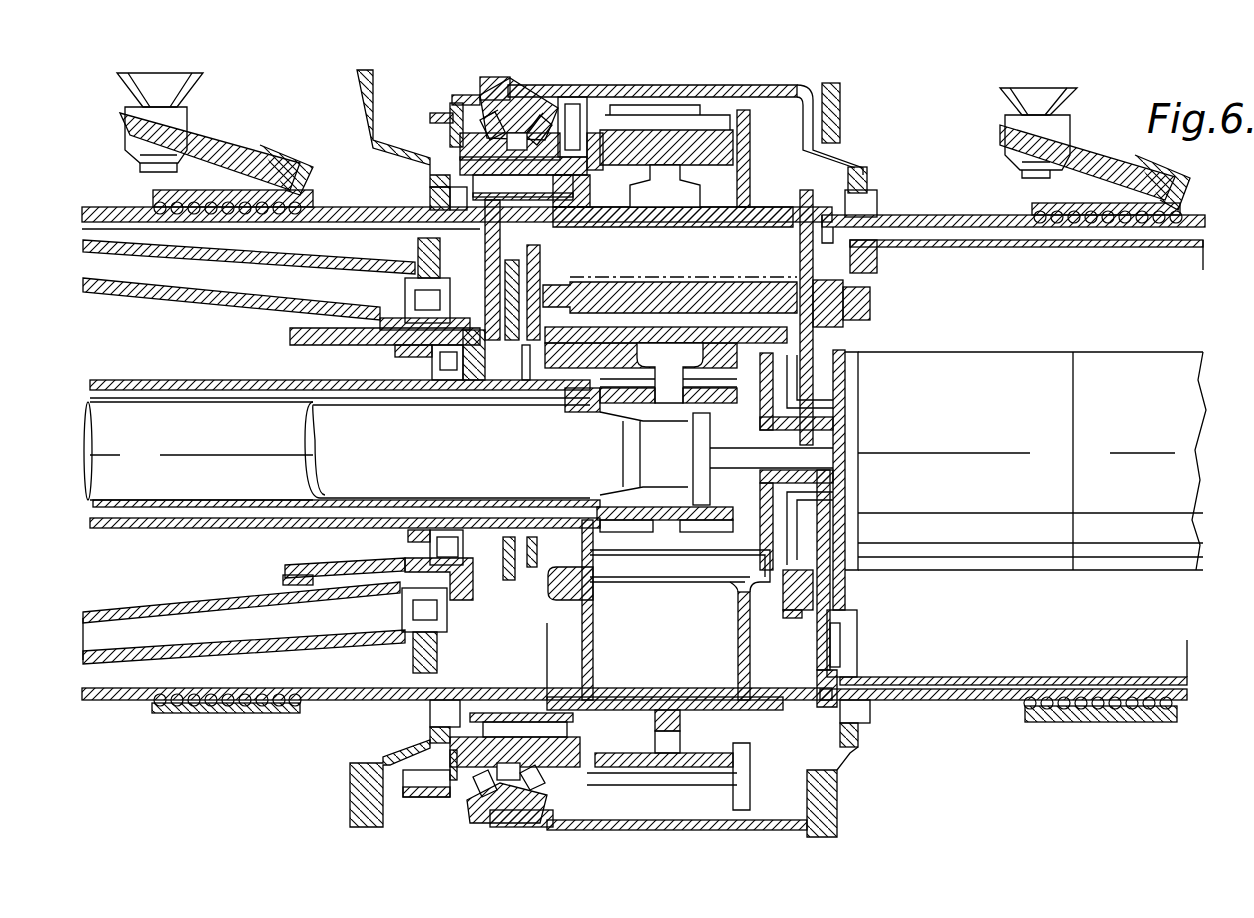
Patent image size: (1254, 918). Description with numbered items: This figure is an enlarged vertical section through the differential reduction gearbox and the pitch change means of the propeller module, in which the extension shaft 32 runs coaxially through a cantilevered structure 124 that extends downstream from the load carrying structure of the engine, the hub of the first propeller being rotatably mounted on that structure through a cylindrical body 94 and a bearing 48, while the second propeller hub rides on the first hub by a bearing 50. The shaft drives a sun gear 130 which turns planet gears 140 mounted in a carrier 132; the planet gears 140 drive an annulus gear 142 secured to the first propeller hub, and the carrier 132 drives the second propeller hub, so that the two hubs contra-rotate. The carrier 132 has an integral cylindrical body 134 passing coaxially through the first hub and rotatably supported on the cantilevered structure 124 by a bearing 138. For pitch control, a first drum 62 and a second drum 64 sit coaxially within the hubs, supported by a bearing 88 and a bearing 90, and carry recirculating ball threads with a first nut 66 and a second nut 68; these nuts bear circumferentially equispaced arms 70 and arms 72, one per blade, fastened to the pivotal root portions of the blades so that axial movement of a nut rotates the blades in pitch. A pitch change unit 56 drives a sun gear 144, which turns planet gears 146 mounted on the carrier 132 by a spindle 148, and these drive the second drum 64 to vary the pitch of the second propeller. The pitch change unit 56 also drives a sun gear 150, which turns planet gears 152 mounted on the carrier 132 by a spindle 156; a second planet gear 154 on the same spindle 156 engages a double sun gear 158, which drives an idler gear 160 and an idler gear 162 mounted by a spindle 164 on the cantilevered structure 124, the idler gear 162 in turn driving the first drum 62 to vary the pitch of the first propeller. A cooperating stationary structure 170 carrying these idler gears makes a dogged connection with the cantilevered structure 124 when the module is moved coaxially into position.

The extension shaft 32 is at (590, 410).
The bearing 48 is at (433, 608).
The bearing 50 is at (453, 807).
The pitch change unit 56 is at (1053, 548).
The first drum 62 is at (140, 702).
The second drum 64 is at (983, 700).
The first nut 66 is at (240, 713).
The second nut 68 is at (1103, 720).
The arms 70 is at (233, 157).
The arms 72 is at (1090, 153).
The bearing 88 is at (432, 718).
The bearing 90 is at (862, 722).
The cylindrical body 94 is at (223, 640).
The cantilevered structure 124 is at (168, 603).
The sun gear 130 is at (635, 520).
The carrier 132 is at (592, 665).
The cylindrical body 134 is at (382, 522).
The bearing 138 is at (450, 370).
The planet gears 140 is at (697, 227).
The annulus gear 142 is at (717, 150).
The sun gear 144 is at (833, 500).
The planet gears 146 is at (857, 590).
The spindle 148 is at (793, 610).
The sun gear 150 is at (840, 413).
The planet gears 152 is at (800, 257).
The second planet gear 154 is at (540, 263).
The spindle 156 is at (640, 297).
The double sun gear 158 is at (520, 380).
The idler gear 160 is at (486, 380).
The idler gear 162 is at (497, 247).
The spindle 164 is at (467, 297).
The stationary structure 170 is at (473, 277).